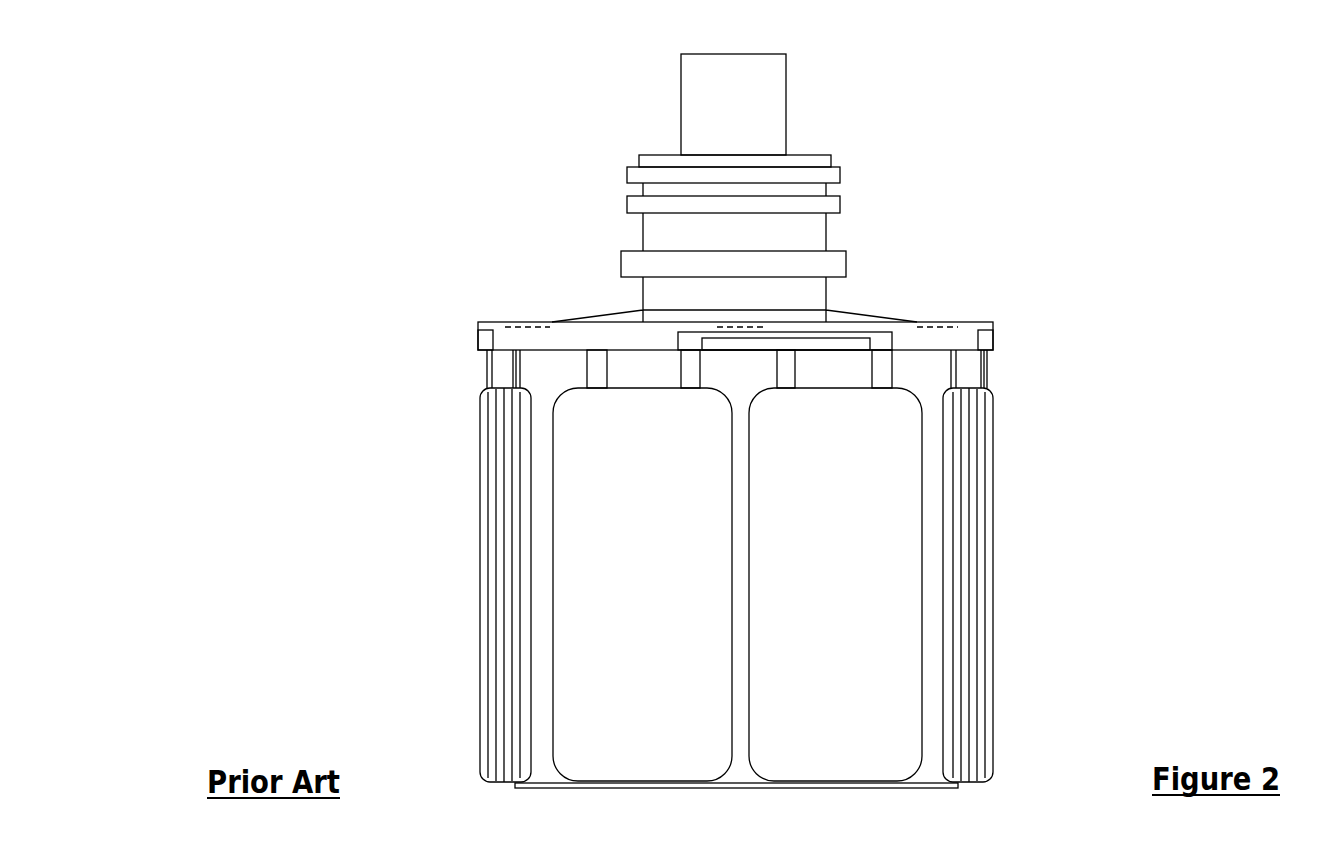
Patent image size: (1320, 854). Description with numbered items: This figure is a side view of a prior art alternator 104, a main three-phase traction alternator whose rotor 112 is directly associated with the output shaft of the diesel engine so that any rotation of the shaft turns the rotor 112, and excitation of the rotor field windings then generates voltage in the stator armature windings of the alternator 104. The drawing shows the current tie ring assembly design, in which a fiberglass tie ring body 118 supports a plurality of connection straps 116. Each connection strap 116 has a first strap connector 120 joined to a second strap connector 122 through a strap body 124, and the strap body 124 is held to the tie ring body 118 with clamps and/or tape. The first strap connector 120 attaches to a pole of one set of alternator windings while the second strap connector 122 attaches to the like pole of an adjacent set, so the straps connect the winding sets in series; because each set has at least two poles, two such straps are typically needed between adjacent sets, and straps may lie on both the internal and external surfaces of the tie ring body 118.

The alternator 104 is at (831, 421).
The rotor 112 is at (750, 188).
The connection straps 116 is at (735, 283).
The tie ring body 118 is at (717, 498).
The first strap connector 120 is at (656, 428).
The second strap connector 122 is at (843, 428).
The strap body 124 is at (785, 444).